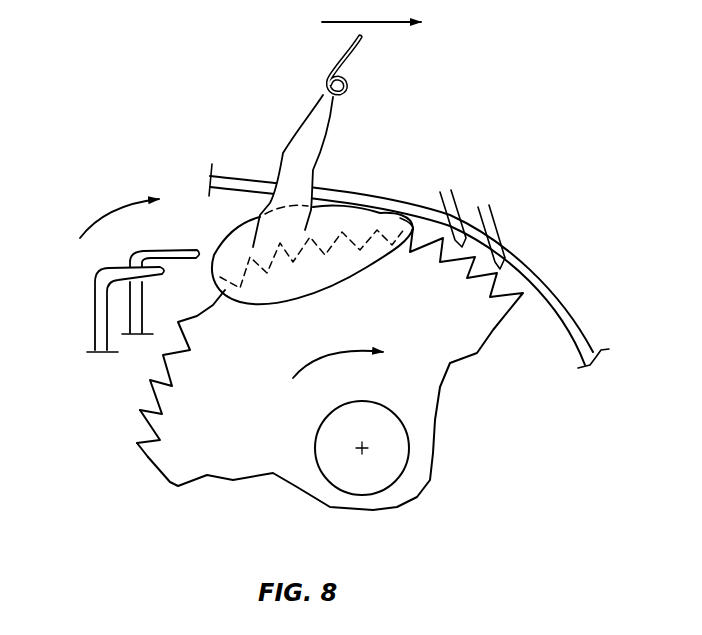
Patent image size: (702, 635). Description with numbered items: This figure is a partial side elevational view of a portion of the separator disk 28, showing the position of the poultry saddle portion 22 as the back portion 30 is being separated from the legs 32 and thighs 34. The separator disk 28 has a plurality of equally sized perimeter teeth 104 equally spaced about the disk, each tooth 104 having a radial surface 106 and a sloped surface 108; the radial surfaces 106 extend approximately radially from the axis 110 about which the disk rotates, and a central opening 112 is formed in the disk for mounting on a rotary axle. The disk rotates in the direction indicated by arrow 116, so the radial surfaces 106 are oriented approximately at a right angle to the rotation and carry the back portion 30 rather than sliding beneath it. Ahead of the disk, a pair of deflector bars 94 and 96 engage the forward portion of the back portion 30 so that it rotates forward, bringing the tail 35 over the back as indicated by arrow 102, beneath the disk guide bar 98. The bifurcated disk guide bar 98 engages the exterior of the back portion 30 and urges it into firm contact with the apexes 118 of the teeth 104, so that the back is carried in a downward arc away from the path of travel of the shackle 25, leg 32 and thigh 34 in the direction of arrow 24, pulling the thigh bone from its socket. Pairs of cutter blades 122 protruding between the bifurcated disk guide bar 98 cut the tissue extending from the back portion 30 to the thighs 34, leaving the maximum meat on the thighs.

The saddle portion 22 is at (278, 163).
The arrows 24 is at (343, 23).
The shackle 25 is at (352, 59).
The separator disk 28 is at (444, 393).
The back portion 30 is at (252, 219).
The legs 32 is at (322, 135).
The thighs 34 is at (302, 191).
The tail 35 is at (405, 230).
The deflector bar 94 is at (112, 268).
The deflector bar 96 is at (145, 283).
The disk guide bar 98 is at (558, 282).
The arrow 102 is at (98, 213).
The perimeter teeth 104 is at (157, 390).
The radial surface 106 is at (142, 434).
The sloped surface 108 is at (147, 460).
The axis 110 is at (360, 447).
The central opening 112 is at (350, 404).
The arrow 116 is at (312, 357).
The apexes 118 is at (343, 233).
The cutter blades 122 is at (490, 216).